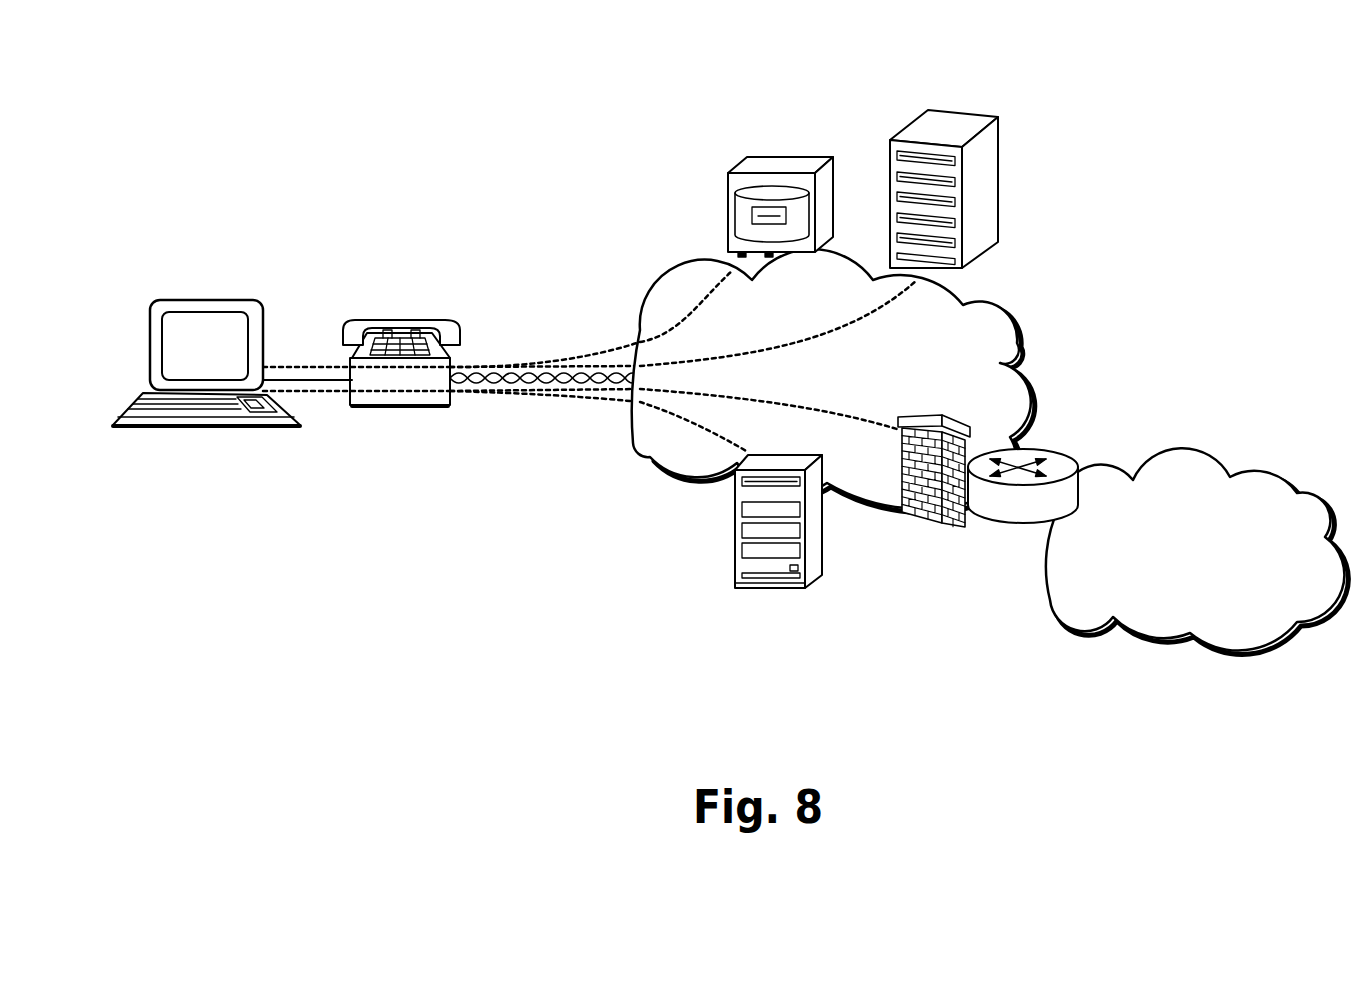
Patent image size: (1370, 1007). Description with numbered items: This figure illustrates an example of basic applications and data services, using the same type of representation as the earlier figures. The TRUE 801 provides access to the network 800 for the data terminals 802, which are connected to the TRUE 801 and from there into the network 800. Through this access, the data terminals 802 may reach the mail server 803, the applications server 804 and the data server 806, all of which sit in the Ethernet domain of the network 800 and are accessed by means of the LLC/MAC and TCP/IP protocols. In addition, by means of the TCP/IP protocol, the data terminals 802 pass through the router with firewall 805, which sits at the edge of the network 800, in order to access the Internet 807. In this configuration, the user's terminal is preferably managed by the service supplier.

The network 800 is at (833, 380).
The TRUE 801 is at (402, 292).
The data terminals 802 is at (208, 458).
The mail server 803 is at (716, 152).
The applications server 804 is at (979, 101).
The router with firewall 805 is at (1060, 436).
The data server 806 is at (722, 563).
The Internet 807 is at (1197, 551).